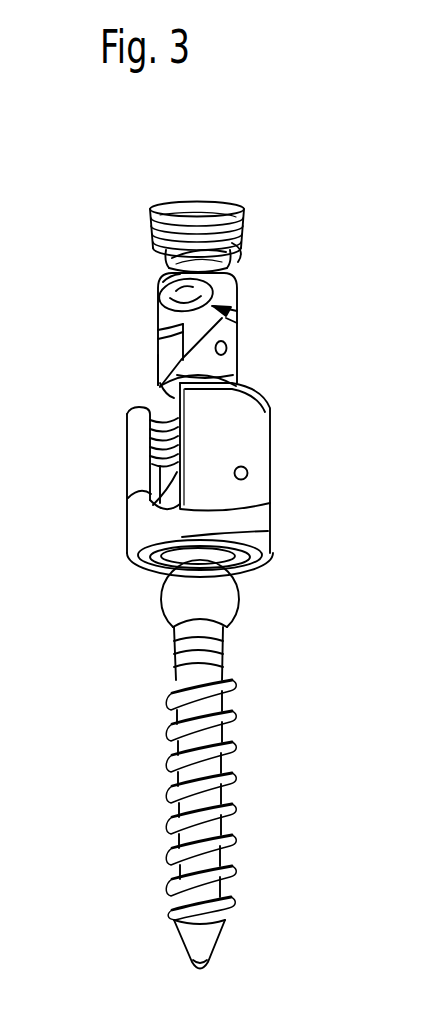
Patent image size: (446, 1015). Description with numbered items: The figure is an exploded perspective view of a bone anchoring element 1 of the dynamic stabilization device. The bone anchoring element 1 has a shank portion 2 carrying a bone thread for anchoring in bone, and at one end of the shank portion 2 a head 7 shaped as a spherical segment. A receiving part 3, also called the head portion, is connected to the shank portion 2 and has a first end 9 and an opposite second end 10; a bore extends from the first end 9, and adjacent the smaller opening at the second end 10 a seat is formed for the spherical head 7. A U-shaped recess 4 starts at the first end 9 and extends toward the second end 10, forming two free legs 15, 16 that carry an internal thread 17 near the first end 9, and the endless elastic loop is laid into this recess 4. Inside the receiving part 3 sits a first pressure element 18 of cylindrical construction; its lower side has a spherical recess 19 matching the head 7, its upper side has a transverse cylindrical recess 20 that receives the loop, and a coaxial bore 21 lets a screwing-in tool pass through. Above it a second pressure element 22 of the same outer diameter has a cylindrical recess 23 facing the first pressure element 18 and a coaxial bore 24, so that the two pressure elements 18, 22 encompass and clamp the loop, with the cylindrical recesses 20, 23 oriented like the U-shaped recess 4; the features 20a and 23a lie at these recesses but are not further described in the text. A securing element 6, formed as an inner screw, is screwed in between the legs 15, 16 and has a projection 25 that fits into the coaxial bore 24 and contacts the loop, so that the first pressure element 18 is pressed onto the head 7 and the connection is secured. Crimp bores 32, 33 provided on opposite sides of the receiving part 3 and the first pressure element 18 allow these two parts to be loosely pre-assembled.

The bone anchoring element 1 is at (248, 719).
The shank portion 2 is at (217, 790).
The receiving part 3 is at (272, 517).
The recess 4 is at (140, 477).
The securing element 6 is at (195, 206).
The head 7 is at (167, 598).
The first end 9 is at (248, 388).
The second end 10 is at (252, 567).
The first leg 15 is at (123, 442).
The second leg 16 is at (260, 428).
The internal thread 17 is at (155, 421).
The first pressure element 18 is at (165, 370).
The spherical recess 19 is at (160, 385).
The cylindrical recess 20 is at (160, 350).
The cutout / recess of pressure element 20a is at (237, 323).
The coaxial bore 21 is at (205, 371).
The second pressure element 22 is at (228, 285).
The cylindrical recess 23 is at (160, 310).
The channel bottom 23a is at (235, 313).
The coaxial bore 24 is at (162, 288).
The projection 25 is at (244, 240).
The crimp bore 32 is at (227, 349).
The crimp bore 33 is at (248, 473).